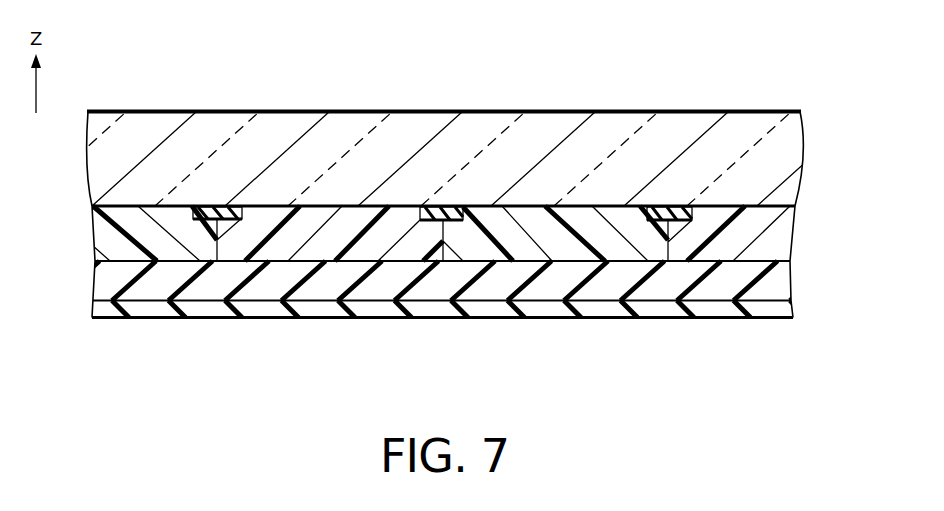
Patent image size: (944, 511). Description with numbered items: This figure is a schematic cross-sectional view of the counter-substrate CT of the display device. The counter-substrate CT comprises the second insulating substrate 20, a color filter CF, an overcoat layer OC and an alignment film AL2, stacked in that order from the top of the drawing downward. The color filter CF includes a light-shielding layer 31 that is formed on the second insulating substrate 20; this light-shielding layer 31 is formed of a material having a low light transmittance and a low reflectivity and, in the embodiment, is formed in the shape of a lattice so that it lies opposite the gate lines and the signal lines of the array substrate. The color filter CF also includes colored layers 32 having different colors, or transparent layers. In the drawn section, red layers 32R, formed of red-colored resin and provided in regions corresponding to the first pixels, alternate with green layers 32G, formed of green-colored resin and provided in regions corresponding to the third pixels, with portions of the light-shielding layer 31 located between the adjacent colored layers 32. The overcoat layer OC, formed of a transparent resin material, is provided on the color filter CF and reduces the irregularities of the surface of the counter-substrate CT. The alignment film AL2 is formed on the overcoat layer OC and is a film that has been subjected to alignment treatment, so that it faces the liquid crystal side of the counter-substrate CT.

The counter-substrate CT is at (802, 109).
The second insulating substrate 20 is at (790, 164).
The color filter CF is at (463, 154).
The colored layers 32 is at (419, 154).
The green layers 32G is at (132, 228).
The red layers 32R is at (358, 230).
The light-shielding layer 31 is at (220, 207).
The overcoat layer OC is at (778, 283).
The alignment film AL2 is at (431, 308).